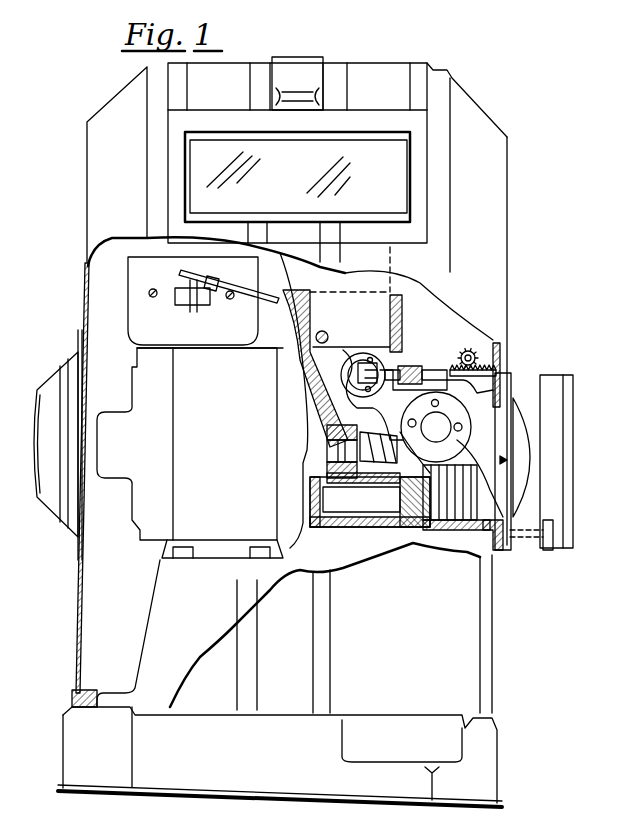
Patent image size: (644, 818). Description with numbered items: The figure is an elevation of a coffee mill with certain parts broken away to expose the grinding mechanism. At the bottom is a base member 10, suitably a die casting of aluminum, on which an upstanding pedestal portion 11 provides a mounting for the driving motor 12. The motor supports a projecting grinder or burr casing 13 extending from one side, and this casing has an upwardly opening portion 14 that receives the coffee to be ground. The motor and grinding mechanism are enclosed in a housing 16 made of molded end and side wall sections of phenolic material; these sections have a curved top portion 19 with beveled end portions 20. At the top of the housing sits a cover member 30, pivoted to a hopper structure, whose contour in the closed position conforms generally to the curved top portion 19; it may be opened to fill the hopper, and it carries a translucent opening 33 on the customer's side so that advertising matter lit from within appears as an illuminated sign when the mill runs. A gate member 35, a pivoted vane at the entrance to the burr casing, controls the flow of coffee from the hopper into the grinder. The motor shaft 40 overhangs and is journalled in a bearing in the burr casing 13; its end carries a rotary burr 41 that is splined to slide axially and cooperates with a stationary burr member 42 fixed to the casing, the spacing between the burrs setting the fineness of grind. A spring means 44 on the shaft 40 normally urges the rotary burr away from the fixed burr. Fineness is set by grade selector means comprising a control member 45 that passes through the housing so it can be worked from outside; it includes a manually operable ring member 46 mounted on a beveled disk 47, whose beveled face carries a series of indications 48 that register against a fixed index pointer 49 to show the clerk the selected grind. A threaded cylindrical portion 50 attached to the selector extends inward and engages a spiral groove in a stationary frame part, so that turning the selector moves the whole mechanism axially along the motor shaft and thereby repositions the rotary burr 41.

The base member 10 is at (72, 748).
The pedestal portion 11 is at (165, 600).
The driving motor 12 is at (192, 510).
The burr casing 13 is at (392, 345).
The upwardly opening portion 14 is at (397, 295).
The housing 16 is at (102, 177).
The curved top portion 19 is at (442, 88).
The beveled end portions 20 is at (489, 110).
The cover member 30 is at (357, 80).
The translucent opening 33 is at (202, 155).
The gate member 35 is at (423, 367).
The motor shaft 40 is at (313, 457).
The rotary burr 41 is at (442, 482).
The stationary burr member 42 is at (407, 527).
The spring means 44 is at (387, 492).
The control member 45 is at (520, 395).
The ring member 46 is at (568, 420).
The beveled disk 47 is at (518, 547).
The indications 48 is at (507, 472).
The fixed index pointer 49 is at (505, 475).
The threaded cylindrical portion 50 is at (443, 533).